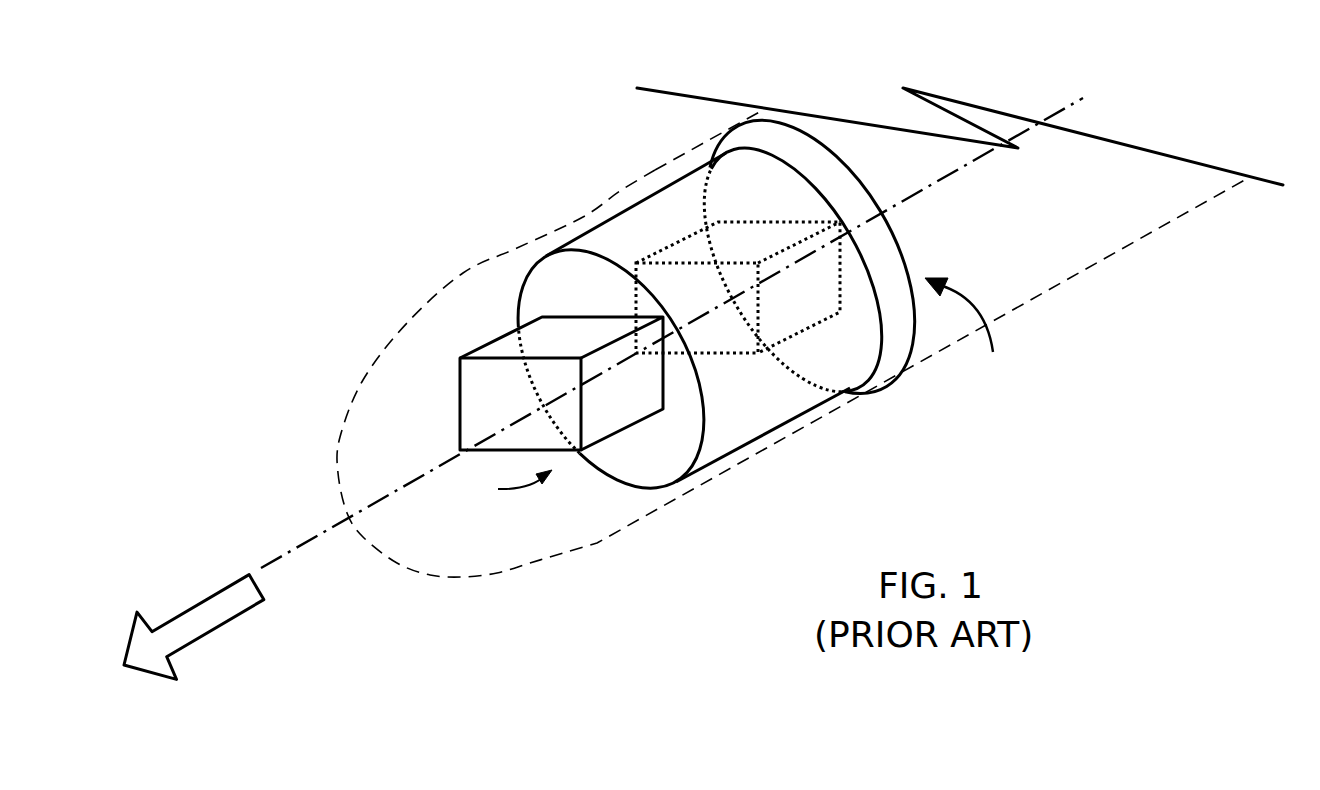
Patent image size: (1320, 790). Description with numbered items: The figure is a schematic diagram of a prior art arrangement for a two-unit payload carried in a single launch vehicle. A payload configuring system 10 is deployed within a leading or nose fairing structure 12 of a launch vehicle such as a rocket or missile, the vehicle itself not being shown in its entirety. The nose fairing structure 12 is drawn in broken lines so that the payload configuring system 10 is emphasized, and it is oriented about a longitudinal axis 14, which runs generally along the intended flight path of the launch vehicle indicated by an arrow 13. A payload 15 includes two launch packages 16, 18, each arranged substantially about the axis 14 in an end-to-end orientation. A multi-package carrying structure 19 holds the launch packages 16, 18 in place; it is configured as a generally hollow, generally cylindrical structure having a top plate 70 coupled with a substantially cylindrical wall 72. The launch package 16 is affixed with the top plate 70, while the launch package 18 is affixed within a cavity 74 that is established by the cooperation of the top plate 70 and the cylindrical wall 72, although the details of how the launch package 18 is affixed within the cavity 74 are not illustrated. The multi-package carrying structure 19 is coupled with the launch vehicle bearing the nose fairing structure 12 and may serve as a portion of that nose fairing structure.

The payload configuring system 10 is at (665, 612).
The nose fairing structure 12 is at (762, 455).
The arrow 13 is at (218, 628).
The longitudinal axis 14 is at (293, 549).
The payload 15 is at (512, 486).
The launch package 16 is at (461, 416).
The launch package 18 is at (659, 258).
The multi-package carrying structure 19 is at (583, 456).
The top plate 70 is at (628, 462).
The cylindrical wall 72 is at (592, 243).
The cavity 74 is at (970, 332).